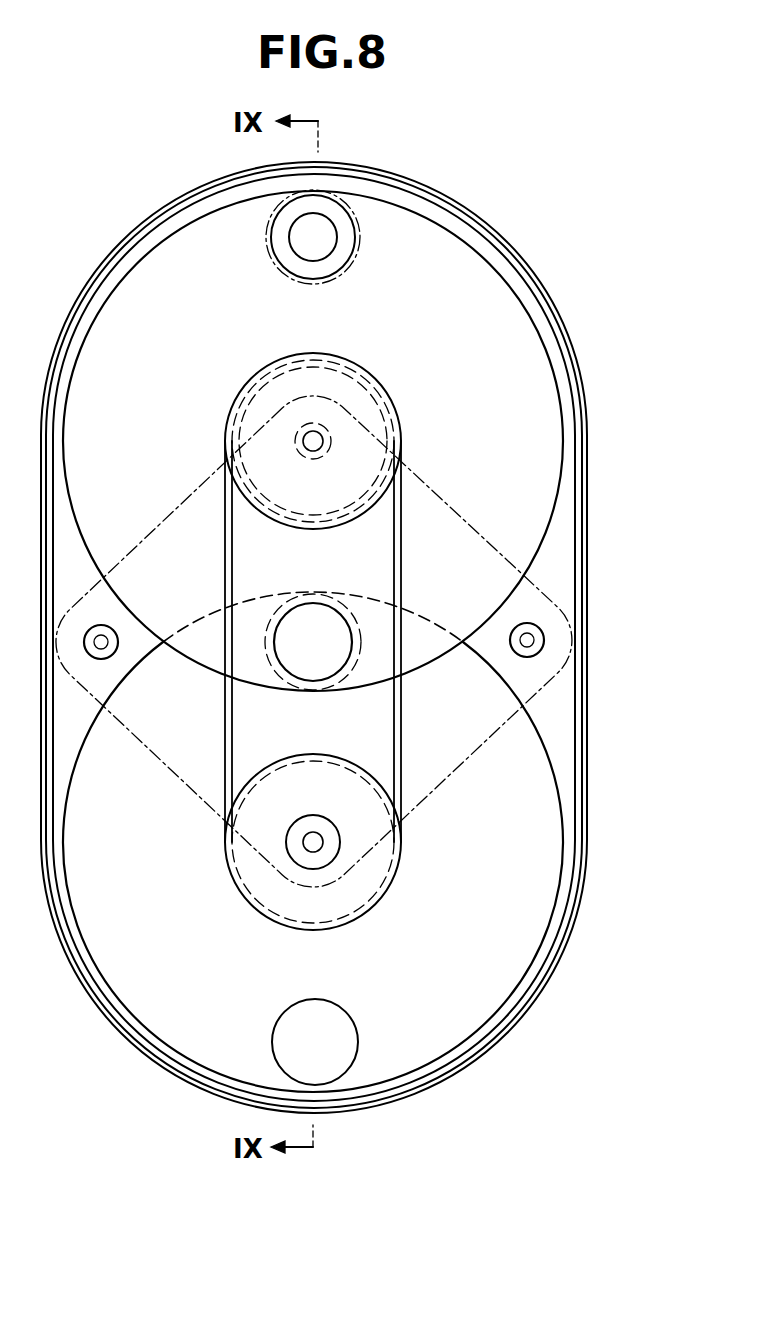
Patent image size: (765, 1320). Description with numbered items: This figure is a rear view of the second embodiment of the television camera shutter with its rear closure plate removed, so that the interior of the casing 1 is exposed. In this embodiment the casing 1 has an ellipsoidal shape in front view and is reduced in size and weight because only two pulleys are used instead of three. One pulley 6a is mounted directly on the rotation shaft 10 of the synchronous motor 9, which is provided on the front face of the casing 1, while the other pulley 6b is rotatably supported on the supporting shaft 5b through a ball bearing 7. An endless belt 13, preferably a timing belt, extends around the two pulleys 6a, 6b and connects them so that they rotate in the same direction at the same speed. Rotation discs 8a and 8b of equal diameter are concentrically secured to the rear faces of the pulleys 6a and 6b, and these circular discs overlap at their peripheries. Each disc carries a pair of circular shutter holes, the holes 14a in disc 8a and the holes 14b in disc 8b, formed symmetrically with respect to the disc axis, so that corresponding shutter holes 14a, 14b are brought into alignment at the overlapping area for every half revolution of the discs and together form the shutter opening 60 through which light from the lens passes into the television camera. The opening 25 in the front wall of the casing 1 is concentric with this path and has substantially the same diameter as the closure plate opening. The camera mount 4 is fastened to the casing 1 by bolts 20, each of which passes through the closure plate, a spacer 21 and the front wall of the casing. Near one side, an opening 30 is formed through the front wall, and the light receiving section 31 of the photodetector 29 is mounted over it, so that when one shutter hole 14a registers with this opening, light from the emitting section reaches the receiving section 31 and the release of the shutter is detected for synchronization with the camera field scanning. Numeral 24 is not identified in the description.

The casing 1 is at (556, 304).
The camera mount 4 is at (445, 493).
The supporting shaft 5b is at (322, 846).
The pulley 6a is at (380, 381).
The pulley 6b is at (387, 895).
The ball bearing 7 is at (300, 836).
The rotation disc 8a is at (548, 396).
The rotation disc 8b is at (556, 888).
The synchronous motor 9 is at (265, 372).
The rotation shaft 10 is at (316, 450).
The endless belt 13 is at (403, 561).
The shutter hole 14a is at (333, 264).
The shutter hole 14b is at (313, 684).
The bolt 20 is at (101, 660).
The spacer 21 is at (100, 628).
The bearing 24 is at (274, 623).
The opening 25 is at (325, 603).
The photodetector 29 is at (358, 236).
The opening 30 is at (307, 262).
The light receiving section 31 is at (356, 256).
The shutter opening 60 is at (330, 656).